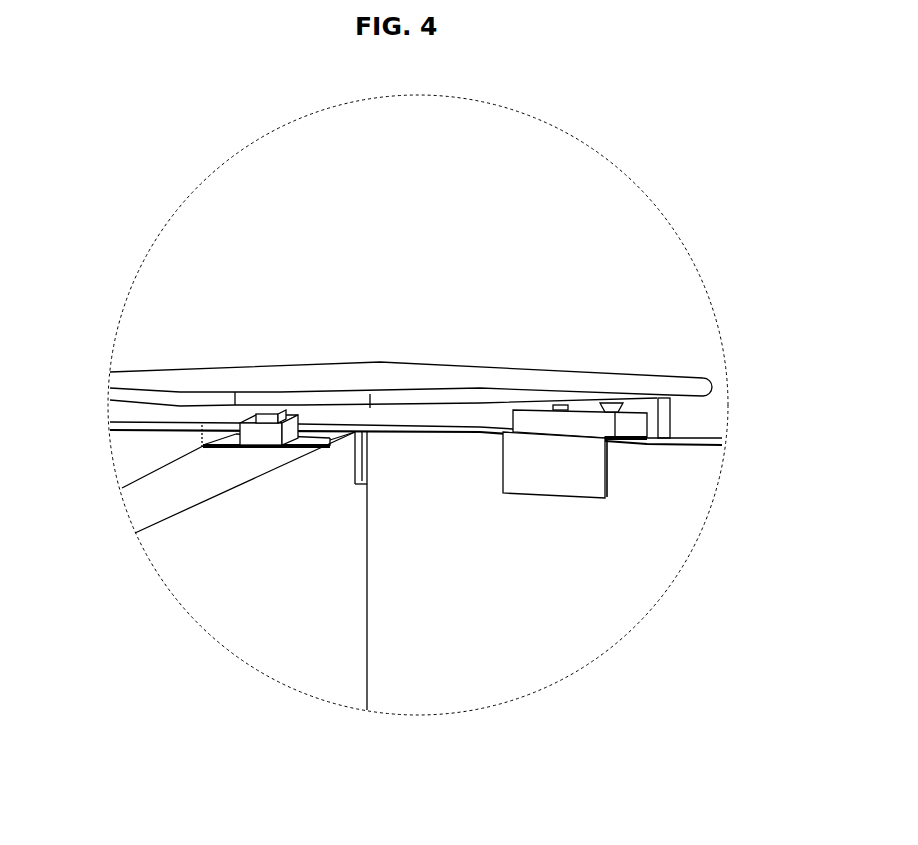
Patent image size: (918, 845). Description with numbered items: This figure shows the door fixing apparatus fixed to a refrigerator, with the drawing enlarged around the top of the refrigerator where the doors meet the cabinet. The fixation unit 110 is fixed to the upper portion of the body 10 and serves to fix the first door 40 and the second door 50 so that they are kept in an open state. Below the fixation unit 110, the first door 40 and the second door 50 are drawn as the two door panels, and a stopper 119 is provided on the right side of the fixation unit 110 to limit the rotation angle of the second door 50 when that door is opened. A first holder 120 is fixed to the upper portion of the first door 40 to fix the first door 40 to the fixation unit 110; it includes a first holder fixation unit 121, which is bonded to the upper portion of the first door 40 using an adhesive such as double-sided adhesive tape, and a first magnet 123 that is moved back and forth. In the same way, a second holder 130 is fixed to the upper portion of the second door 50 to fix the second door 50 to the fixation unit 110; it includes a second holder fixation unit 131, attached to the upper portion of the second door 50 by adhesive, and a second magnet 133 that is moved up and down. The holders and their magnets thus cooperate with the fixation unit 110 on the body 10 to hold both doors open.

The body 10 is at (130, 411).
The first door 40 is at (243, 608).
The second door 50 is at (578, 618).
The fixation unit 110 is at (406, 361).
The stopper 119 is at (673, 413).
The first holder 120 is at (278, 441).
The first holder fixation unit 121 is at (310, 425).
The first magnet 123 is at (262, 412).
The second holder 130 is at (591, 439).
The second holder fixation unit 131 is at (550, 478).
The second magnet 133 is at (606, 401).